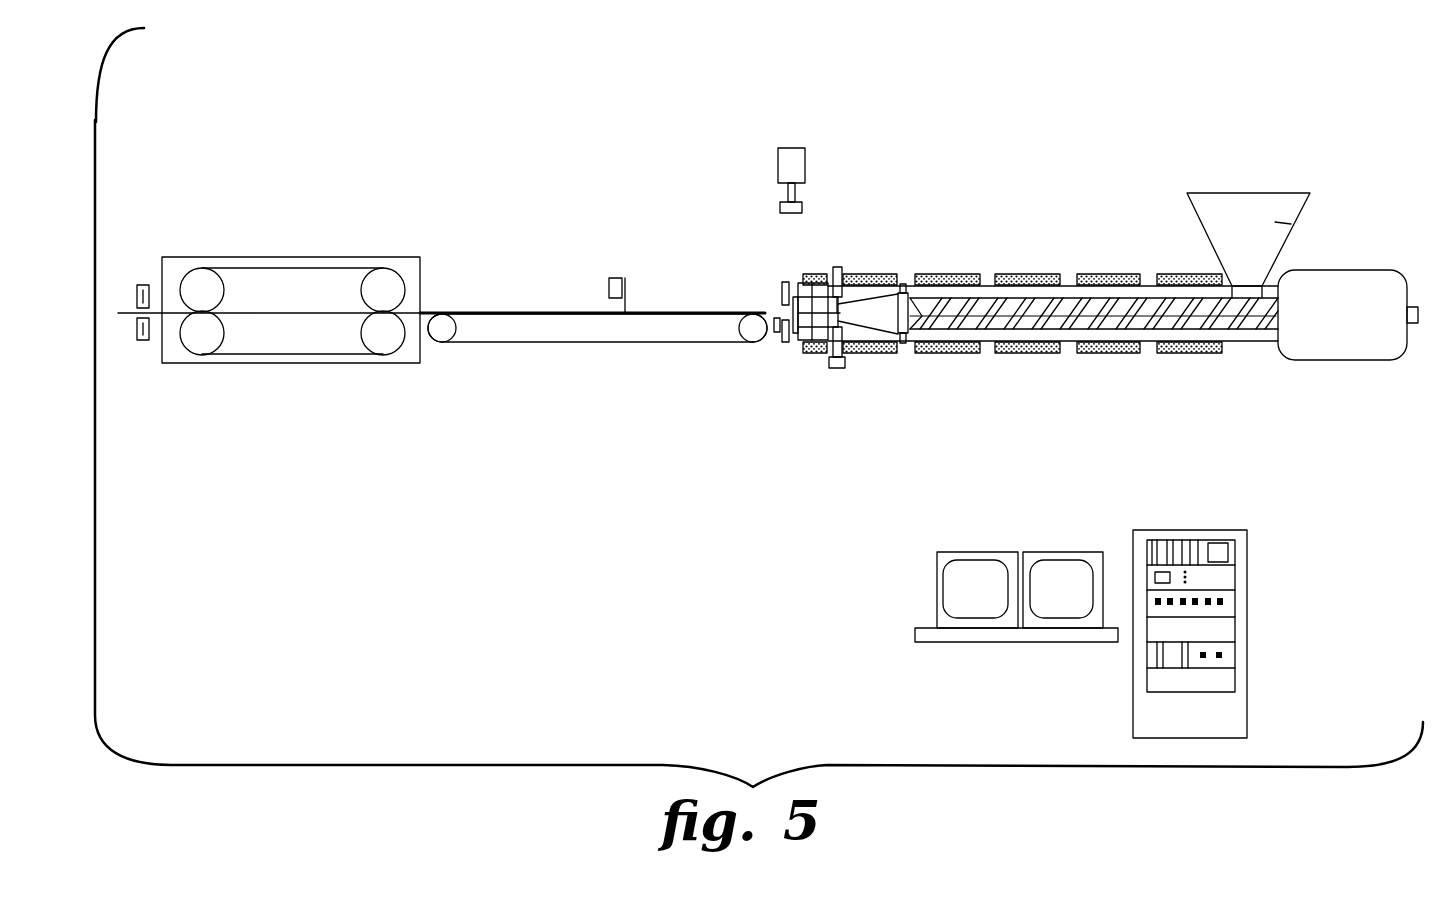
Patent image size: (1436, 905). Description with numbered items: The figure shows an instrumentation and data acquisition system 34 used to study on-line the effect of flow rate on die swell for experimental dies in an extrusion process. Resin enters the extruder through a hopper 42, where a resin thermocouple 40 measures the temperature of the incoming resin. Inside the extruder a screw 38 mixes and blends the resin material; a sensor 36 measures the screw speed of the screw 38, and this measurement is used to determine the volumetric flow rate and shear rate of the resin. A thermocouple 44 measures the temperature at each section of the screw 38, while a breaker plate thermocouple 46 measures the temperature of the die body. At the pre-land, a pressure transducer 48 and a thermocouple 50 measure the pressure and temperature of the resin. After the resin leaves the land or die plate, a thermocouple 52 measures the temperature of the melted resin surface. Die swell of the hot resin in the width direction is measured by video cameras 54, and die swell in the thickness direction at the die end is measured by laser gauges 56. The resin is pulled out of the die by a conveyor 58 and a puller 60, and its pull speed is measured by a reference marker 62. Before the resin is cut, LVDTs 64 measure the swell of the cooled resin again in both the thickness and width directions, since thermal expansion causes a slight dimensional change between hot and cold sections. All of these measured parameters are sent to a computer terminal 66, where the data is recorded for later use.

The instrumentation and data acquisition system 34 is at (590, 468).
The sensor 36 is at (1418, 324).
The screw 38 is at (1248, 342).
The resin thermocouple 40 is at (1225, 257).
The hopper 42 is at (1290, 223).
The thermocouple 44 is at (1191, 354).
The breaker plate thermocouple 46 is at (905, 287).
The pressure transducer 48 is at (833, 368).
The thermocouple 50 is at (836, 266).
The thermocouple 52 is at (793, 342).
The video cameras 54 is at (805, 163).
The laser gauges 56 is at (781, 284).
The conveyor 58 is at (598, 336).
The puller 60 is at (290, 282).
The reference marker 62 is at (609, 288).
The LVDTs 64 is at (142, 284).
The computer terminal 66 is at (1082, 694).